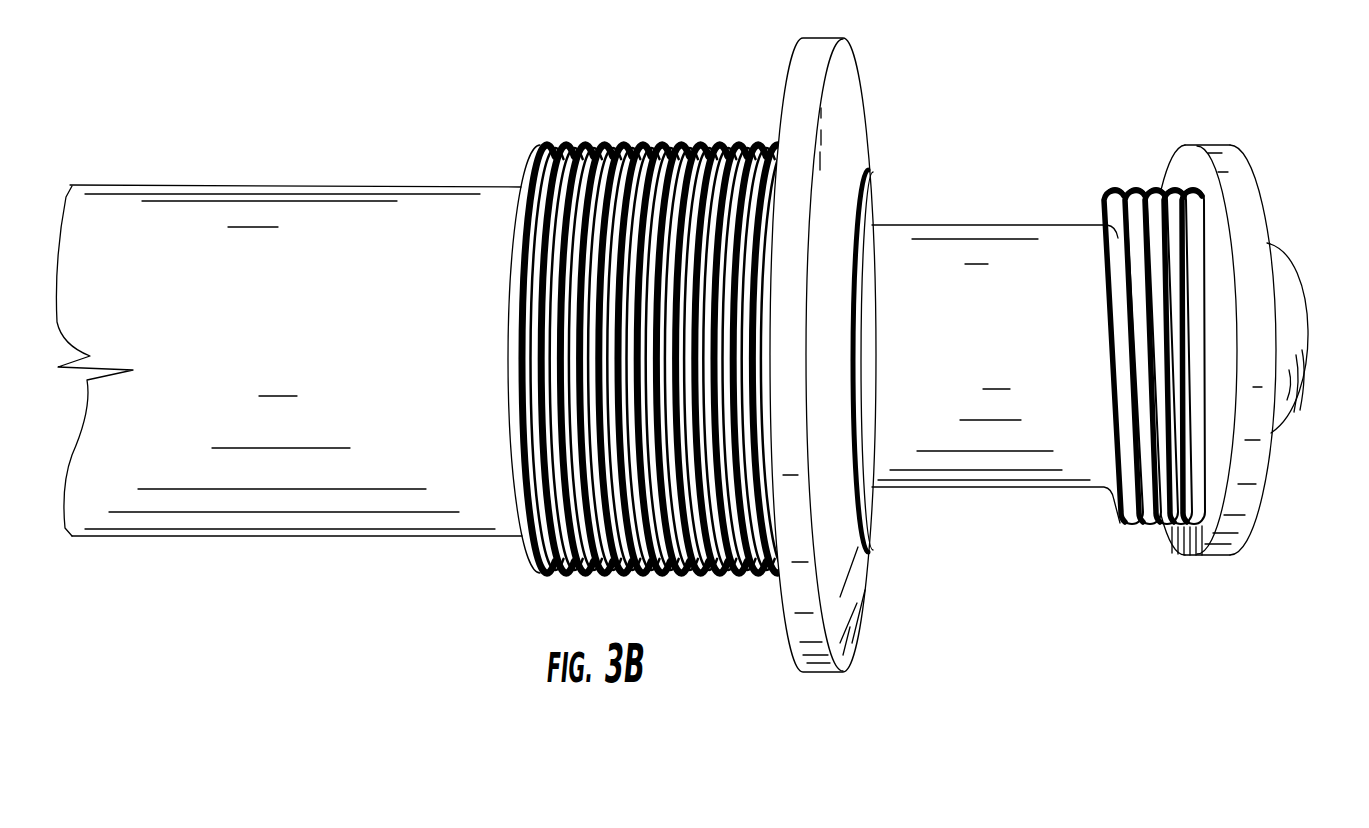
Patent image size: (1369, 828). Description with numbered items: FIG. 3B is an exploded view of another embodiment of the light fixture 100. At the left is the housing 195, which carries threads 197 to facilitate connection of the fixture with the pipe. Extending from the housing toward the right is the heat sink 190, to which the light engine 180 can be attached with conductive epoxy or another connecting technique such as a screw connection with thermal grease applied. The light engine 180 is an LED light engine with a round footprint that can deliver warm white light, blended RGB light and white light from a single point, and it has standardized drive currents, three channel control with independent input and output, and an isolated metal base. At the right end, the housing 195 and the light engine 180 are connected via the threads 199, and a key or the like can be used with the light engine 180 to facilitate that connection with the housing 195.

The light fixture 100 is at (1040, 115).
The light engine 180 is at (1250, 303).
The heat sink 190 is at (1022, 359).
The housing 195 is at (408, 384).
The threads 197 is at (674, 367).
The threads 199 is at (1150, 516).